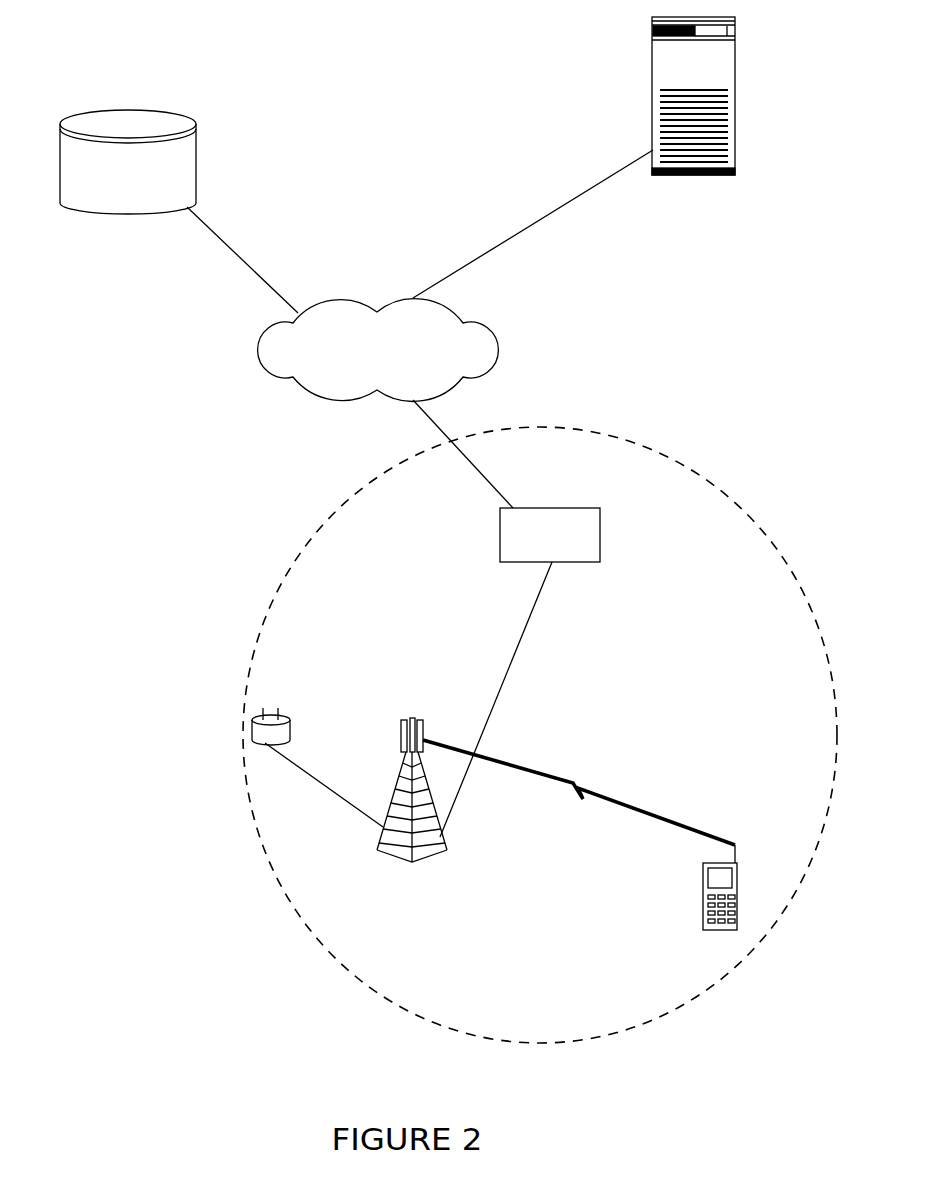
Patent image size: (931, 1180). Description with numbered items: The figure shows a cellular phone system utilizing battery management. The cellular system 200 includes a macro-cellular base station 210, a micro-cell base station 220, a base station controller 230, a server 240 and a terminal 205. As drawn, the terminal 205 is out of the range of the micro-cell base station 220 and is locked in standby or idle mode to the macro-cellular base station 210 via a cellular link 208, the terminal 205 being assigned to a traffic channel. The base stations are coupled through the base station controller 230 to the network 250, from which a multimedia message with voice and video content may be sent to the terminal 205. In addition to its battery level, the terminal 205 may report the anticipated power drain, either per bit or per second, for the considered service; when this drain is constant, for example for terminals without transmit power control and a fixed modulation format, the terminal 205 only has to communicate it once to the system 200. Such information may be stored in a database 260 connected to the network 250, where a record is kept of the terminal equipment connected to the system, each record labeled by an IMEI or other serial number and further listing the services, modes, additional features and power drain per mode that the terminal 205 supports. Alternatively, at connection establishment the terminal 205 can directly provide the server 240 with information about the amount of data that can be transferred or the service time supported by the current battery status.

The cellular system 200 is at (276, 581).
The terminal 205 is at (712, 932).
The cellular link 208 is at (598, 789).
The macro-cellular base station 210 is at (412, 719).
The micro-cell base station 220 is at (285, 716).
The base station controller 230 is at (575, 508).
The server 240 is at (658, 177).
The network 250 is at (478, 323).
The database 260 is at (168, 122).